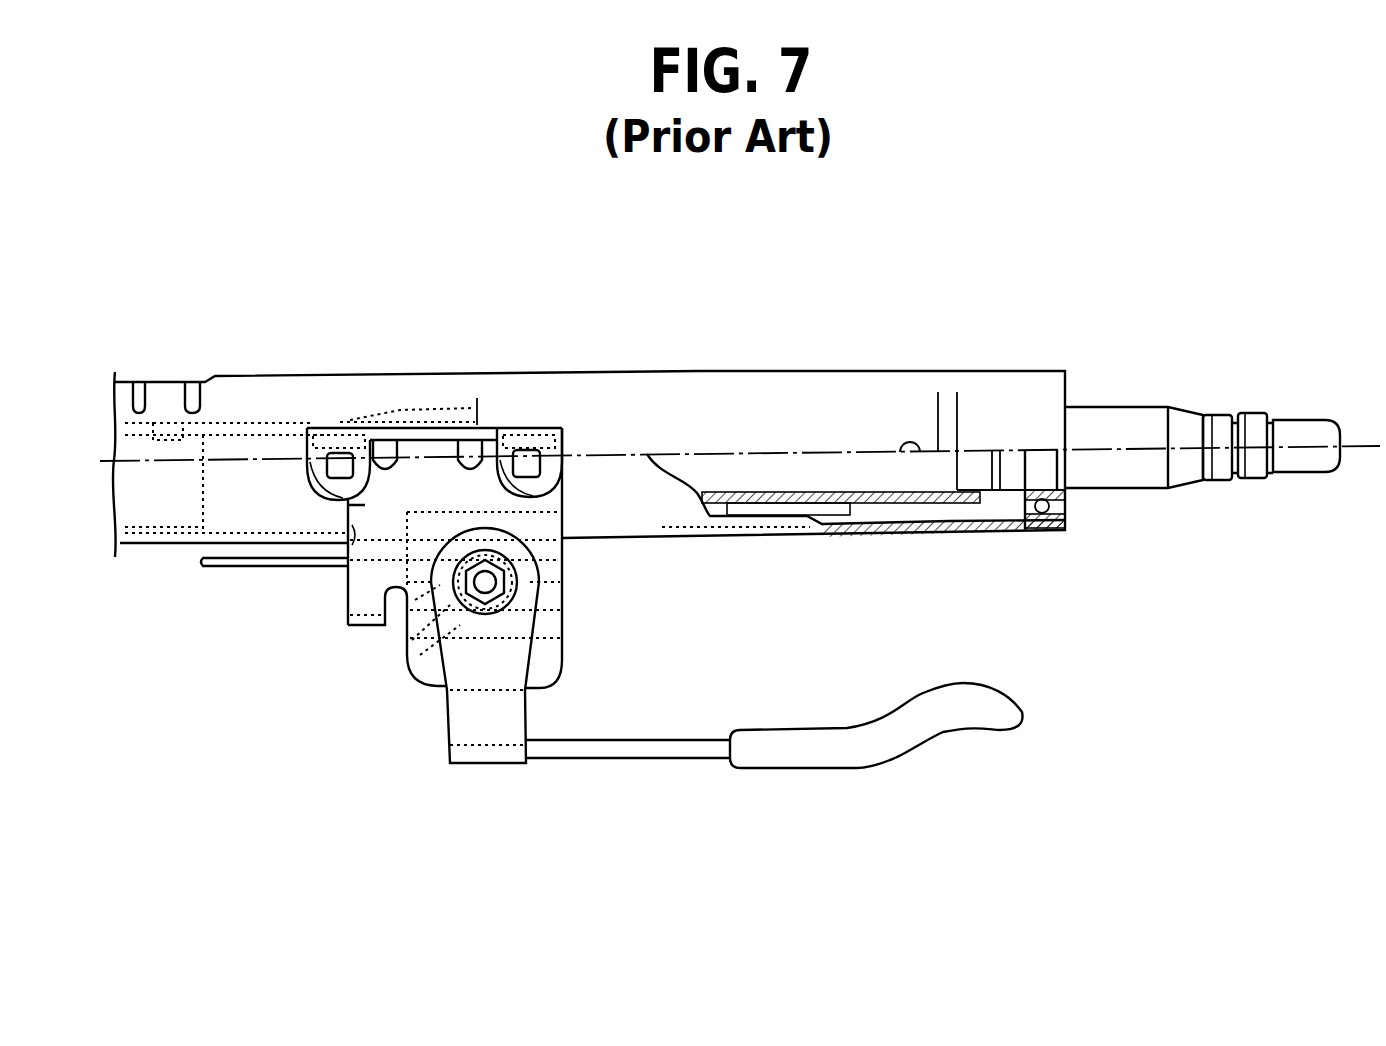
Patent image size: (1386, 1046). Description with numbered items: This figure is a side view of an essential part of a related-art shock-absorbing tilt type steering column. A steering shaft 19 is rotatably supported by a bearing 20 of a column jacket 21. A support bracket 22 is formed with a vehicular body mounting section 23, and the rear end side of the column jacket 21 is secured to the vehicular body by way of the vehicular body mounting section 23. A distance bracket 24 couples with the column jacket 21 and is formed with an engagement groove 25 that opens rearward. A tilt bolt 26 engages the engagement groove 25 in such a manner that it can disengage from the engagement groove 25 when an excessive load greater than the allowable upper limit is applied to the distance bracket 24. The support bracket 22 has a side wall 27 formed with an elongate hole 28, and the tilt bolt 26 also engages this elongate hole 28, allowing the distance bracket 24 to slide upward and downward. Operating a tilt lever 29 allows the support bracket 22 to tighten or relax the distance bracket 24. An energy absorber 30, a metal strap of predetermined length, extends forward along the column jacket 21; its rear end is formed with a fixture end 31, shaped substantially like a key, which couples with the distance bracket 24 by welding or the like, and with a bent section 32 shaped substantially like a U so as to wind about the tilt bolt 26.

The steering shaft 19 is at (1103, 425).
The bearing 20 is at (1042, 531).
The column jacket 21 is at (692, 405).
The support bracket 22 is at (347, 505).
The vehicular body mounting section 23 is at (530, 427).
The distance bracket 24 is at (400, 620).
The engagement groove 25 is at (567, 605).
The tilt bolt 26 is at (493, 585).
The side wall 27 is at (375, 523).
The elongate hole 28 is at (435, 630).
The tilt lever 29 is at (637, 763).
The energy absorber 30 is at (240, 568).
The fixture end 31 is at (402, 618).
The bent section 32 is at (567, 582).